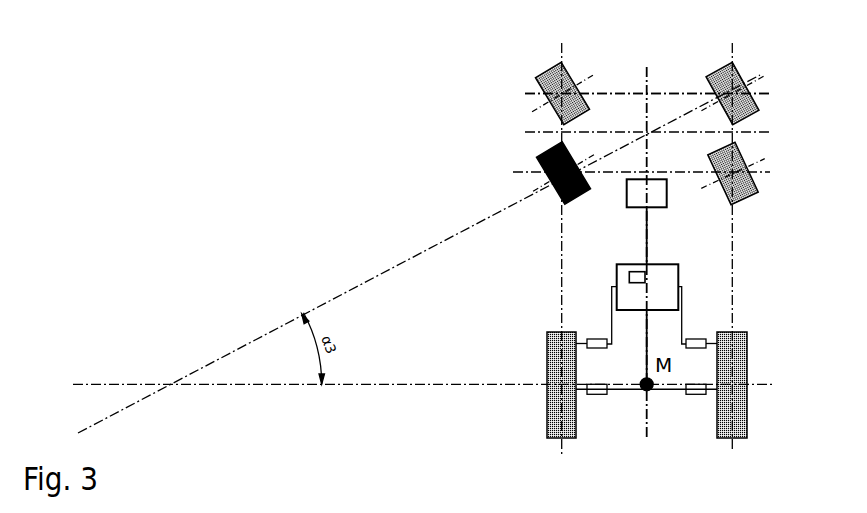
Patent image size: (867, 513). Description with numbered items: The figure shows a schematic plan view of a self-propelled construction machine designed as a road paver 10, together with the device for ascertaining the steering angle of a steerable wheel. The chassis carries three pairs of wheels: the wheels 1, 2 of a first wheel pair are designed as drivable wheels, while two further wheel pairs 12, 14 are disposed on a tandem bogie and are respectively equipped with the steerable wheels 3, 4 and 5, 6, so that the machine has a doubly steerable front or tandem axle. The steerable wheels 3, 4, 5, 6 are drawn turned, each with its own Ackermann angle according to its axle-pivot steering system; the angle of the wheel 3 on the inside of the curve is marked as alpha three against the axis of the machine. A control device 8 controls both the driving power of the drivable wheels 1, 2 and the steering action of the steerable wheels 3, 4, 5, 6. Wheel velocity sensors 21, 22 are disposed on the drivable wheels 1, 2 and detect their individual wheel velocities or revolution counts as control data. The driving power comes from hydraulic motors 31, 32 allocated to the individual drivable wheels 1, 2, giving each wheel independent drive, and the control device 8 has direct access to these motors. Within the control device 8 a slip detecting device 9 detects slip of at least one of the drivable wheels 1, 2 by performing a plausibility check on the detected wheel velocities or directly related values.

The drivable wheel 1 is at (553, 390).
The drivable wheel 2 is at (740, 337).
The steerable wheel 3 is at (547, 182).
The steerable wheel 4 is at (718, 182).
The steerable wheel 5 is at (553, 63).
The steerable wheel 6 is at (731, 63).
The control device 8 is at (670, 273).
The slip detecting device 9 is at (633, 275).
The road paver 10 is at (380, 146).
The wheel pair 12 is at (486, 178).
The wheel pair 14 is at (471, 95).
The wheel velocity sensor 21 is at (587, 340).
The wheel velocity sensor 22 is at (688, 338).
The hydraulic motor 31 is at (600, 394).
The hydraulic motor 32 is at (700, 394).